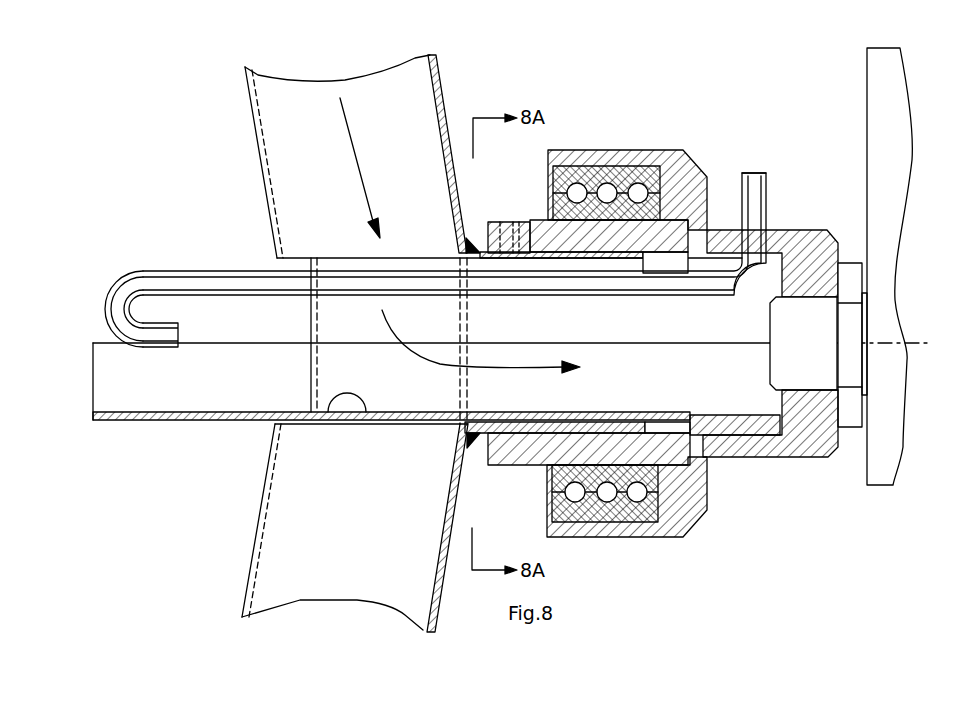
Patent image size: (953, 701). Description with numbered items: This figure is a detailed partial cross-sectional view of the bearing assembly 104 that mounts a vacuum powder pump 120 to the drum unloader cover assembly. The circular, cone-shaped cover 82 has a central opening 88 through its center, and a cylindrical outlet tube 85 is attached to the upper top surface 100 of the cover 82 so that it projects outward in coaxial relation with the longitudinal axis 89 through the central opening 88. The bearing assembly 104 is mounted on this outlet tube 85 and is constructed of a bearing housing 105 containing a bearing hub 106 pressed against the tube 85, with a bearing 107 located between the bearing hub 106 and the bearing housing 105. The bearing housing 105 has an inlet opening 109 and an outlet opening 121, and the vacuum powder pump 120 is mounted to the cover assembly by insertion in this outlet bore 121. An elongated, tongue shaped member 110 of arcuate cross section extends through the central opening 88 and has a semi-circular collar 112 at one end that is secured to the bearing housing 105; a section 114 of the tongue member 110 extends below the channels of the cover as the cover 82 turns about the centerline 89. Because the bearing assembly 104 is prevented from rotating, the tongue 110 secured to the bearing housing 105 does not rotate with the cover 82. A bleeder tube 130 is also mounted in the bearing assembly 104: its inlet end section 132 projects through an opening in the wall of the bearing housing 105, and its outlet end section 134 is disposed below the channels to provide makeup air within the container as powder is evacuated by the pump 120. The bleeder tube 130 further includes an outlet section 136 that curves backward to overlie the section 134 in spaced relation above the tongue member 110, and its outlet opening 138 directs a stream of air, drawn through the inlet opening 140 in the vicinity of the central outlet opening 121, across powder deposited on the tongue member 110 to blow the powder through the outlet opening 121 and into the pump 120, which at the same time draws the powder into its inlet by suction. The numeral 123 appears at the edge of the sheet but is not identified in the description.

The cover 82 is at (462, 69).
The outlet tube 85 is at (530, 222).
The central opening 88 is at (442, 440).
The longitudinal axis 89 is at (233, 383).
The upper top surface 100 is at (462, 208).
The bearing assembly 104 is at (716, 135).
The bearing housing 105 is at (762, 450).
The bearing hub 106 is at (677, 452).
The bearing 107 is at (617, 505).
The inlet opening 109 is at (482, 437).
The tongue shaped member 110 is at (135, 420).
The semi-circular collar 112 is at (735, 428).
The section of tongue member 114 is at (367, 403).
The vacuum powder pump 120 is at (890, 240).
The outlet opening 121 is at (800, 297).
The frame member 123 is at (939, 10).
The bleeder tube 130 is at (469, 262).
The inlet end section 132 is at (753, 230).
The outlet end section 134 is at (182, 283).
The outlet section 136 is at (116, 297).
The outlet opening 138 is at (178, 338).
The inlet opening 140 is at (762, 173).